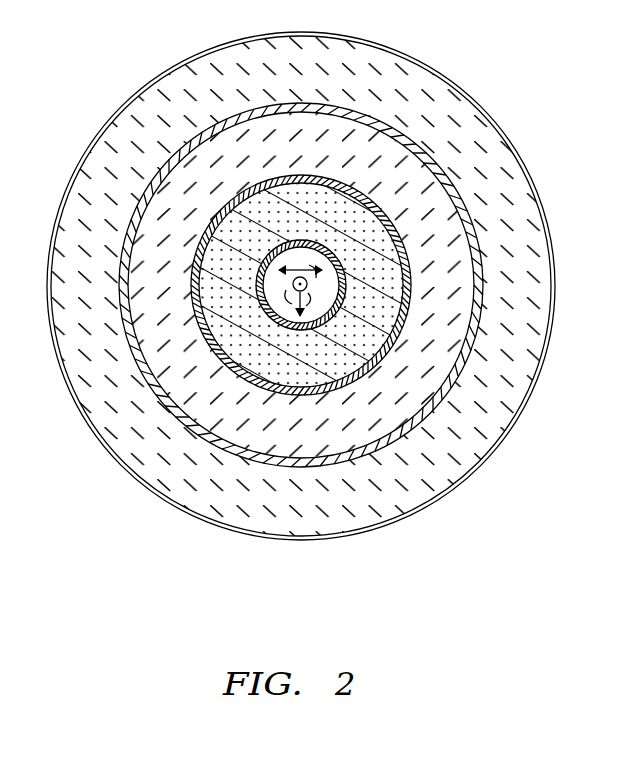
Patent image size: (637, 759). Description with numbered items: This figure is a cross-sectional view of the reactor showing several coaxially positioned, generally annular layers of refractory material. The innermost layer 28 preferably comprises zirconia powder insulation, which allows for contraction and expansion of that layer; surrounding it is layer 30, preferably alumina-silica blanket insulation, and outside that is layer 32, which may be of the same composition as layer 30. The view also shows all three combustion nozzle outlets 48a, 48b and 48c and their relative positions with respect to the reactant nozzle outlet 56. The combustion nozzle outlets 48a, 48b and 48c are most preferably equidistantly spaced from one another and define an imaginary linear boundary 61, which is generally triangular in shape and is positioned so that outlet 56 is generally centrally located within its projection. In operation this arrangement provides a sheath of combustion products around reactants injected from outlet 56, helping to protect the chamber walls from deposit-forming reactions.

The layer 32 is at (96, 299).
The layer 30 is at (170, 299).
The layer 28 is at (258, 295).
The reactant nozzle outlet 56 is at (297, 274).
The imaginary linear boundary 61 is at (339, 308).
The outlet end 48a is at (282, 255).
The outlet end 48b is at (329, 252).
The outlet end 48c is at (297, 328).